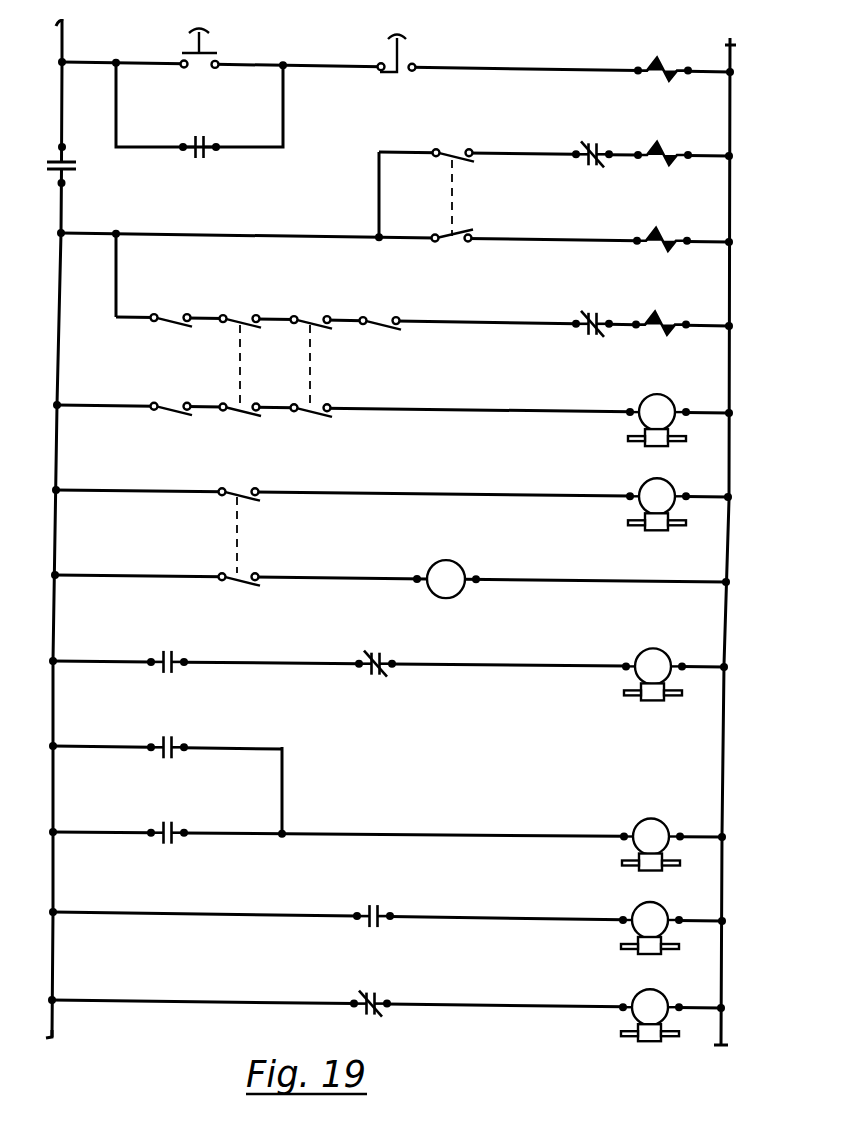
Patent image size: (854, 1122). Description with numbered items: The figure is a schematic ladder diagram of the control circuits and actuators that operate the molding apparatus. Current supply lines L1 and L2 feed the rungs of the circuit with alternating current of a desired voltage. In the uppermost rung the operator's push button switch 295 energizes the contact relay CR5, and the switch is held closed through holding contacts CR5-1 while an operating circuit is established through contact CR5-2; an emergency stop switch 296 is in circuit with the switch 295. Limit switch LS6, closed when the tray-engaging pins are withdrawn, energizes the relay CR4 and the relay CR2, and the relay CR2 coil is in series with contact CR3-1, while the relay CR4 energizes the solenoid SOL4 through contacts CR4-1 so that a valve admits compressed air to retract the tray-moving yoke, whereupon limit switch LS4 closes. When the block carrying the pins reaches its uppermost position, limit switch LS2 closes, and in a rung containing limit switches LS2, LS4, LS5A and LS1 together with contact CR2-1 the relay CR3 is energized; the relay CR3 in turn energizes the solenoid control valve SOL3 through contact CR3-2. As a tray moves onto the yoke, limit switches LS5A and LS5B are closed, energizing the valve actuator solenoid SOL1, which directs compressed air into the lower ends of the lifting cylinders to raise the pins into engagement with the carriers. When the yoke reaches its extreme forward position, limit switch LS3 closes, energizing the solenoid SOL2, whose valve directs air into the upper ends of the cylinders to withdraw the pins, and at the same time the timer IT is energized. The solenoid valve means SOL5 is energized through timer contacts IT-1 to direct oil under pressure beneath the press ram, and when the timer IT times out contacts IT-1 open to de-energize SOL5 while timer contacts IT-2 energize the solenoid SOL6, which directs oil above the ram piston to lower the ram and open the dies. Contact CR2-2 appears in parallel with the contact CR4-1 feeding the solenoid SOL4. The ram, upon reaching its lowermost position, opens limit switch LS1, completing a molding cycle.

The push button switch 295 is at (213, 54).
The emergency stop switch 296 is at (407, 56).
The current supply line L1 is at (69, 525).
The current supply line L2 is at (739, 538).
The contact relay CR5 is at (663, 60).
The holding contacts of relay CR5 CR5-1 is at (210, 134).
The contact of relay CR5 CR5-2 is at (91, 166).
The limit switch LS6 is at (453, 182).
The relay CR3 normally closed contact CR3-1 is at (595, 142).
The relay CR2 is at (663, 143).
The relay CR4 is at (662, 229).
The limit switch LS2 is at (167, 309).
The limit switch LS4 is at (239, 354).
The limit switch LS5A is at (308, 354).
The limit switch LS1 is at (381, 311).
The relay CR2 normally closed contact CR2-1 is at (583, 313).
The relay CR3 is at (661, 313).
The limit switch LS5B is at (164, 396).
The valve actuator solenoid SOL1 is at (658, 409).
The limit switch LS3 is at (238, 524).
The solenoid SOL2 is at (637, 499).
The timer IT is at (446, 569).
The contact of relay CR3 CR3-2 is at (176, 647).
The contacts of relay CR4 CR4-1 is at (275, 733).
The solenoid control valve SOL3 is at (654, 662).
The relay CR2 contact CR2-2 is at (174, 733).
The solenoid SOL4 is at (652, 831).
The timer contacts IT-1 is at (373, 903).
The solenoid valve means SOL5 is at (628, 921).
The timer contacts IT-2 is at (374, 991).
The solenoid SOL6 is at (629, 1008).